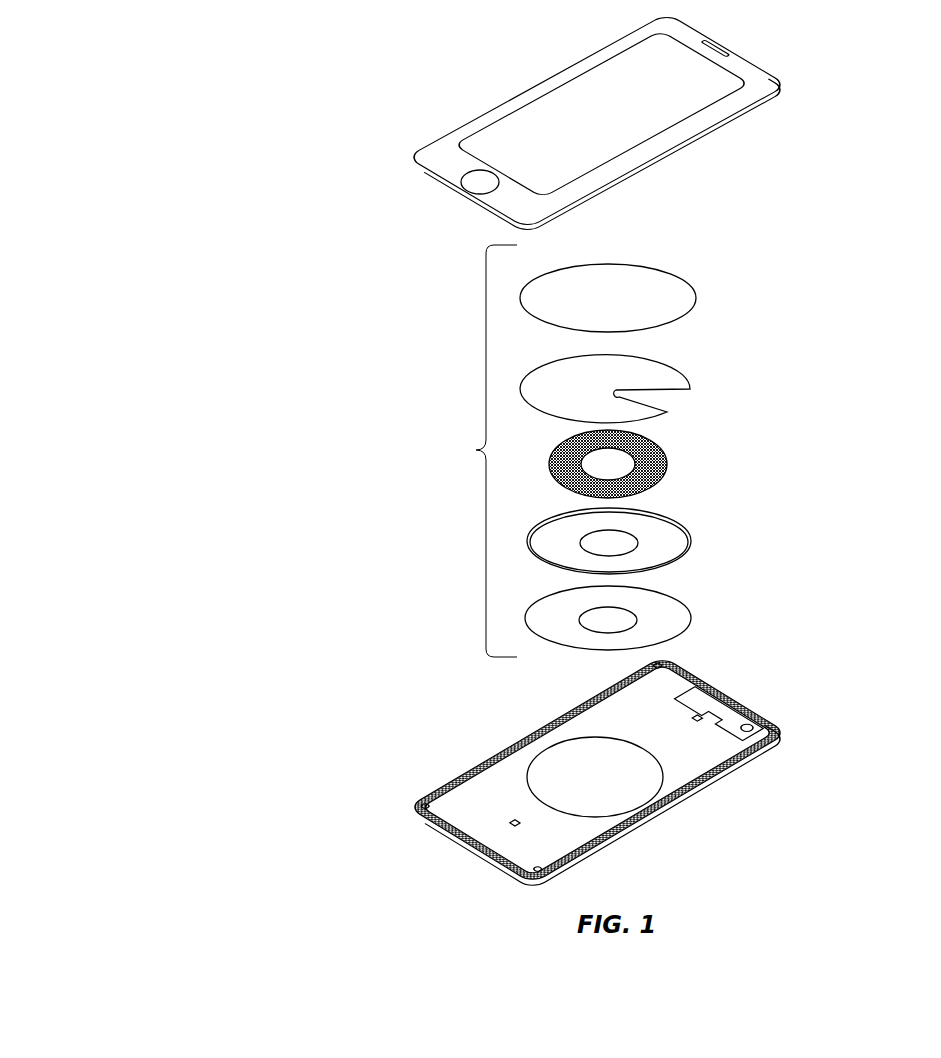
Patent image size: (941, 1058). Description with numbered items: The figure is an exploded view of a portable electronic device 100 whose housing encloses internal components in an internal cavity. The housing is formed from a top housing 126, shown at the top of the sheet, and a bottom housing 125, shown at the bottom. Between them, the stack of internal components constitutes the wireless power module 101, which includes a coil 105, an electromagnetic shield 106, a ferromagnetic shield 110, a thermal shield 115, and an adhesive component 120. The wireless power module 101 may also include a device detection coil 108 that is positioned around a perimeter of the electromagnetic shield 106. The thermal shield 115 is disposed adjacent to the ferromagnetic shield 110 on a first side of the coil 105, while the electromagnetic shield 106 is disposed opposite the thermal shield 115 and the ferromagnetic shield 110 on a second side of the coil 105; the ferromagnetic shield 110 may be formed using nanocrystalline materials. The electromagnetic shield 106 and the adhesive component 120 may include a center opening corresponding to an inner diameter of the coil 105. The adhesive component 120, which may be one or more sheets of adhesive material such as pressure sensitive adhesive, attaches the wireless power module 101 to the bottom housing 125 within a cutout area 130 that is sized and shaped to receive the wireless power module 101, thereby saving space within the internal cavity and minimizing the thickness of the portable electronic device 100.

The portable electronic device 100 is at (128, 165).
The wireless power module 101 is at (452, 443).
The coil 105 is at (665, 463).
The electromagnetic shield 106 is at (665, 523).
The device detection coil 108 is at (689, 545).
The ferromagnetic shield 110 is at (695, 390).
The thermal shield 115 is at (695, 298).
The adhesive component 120 is at (688, 630).
The bottom housing 125 is at (775, 750).
The top housing 126 is at (690, 150).
The cutout area 130 is at (552, 758).